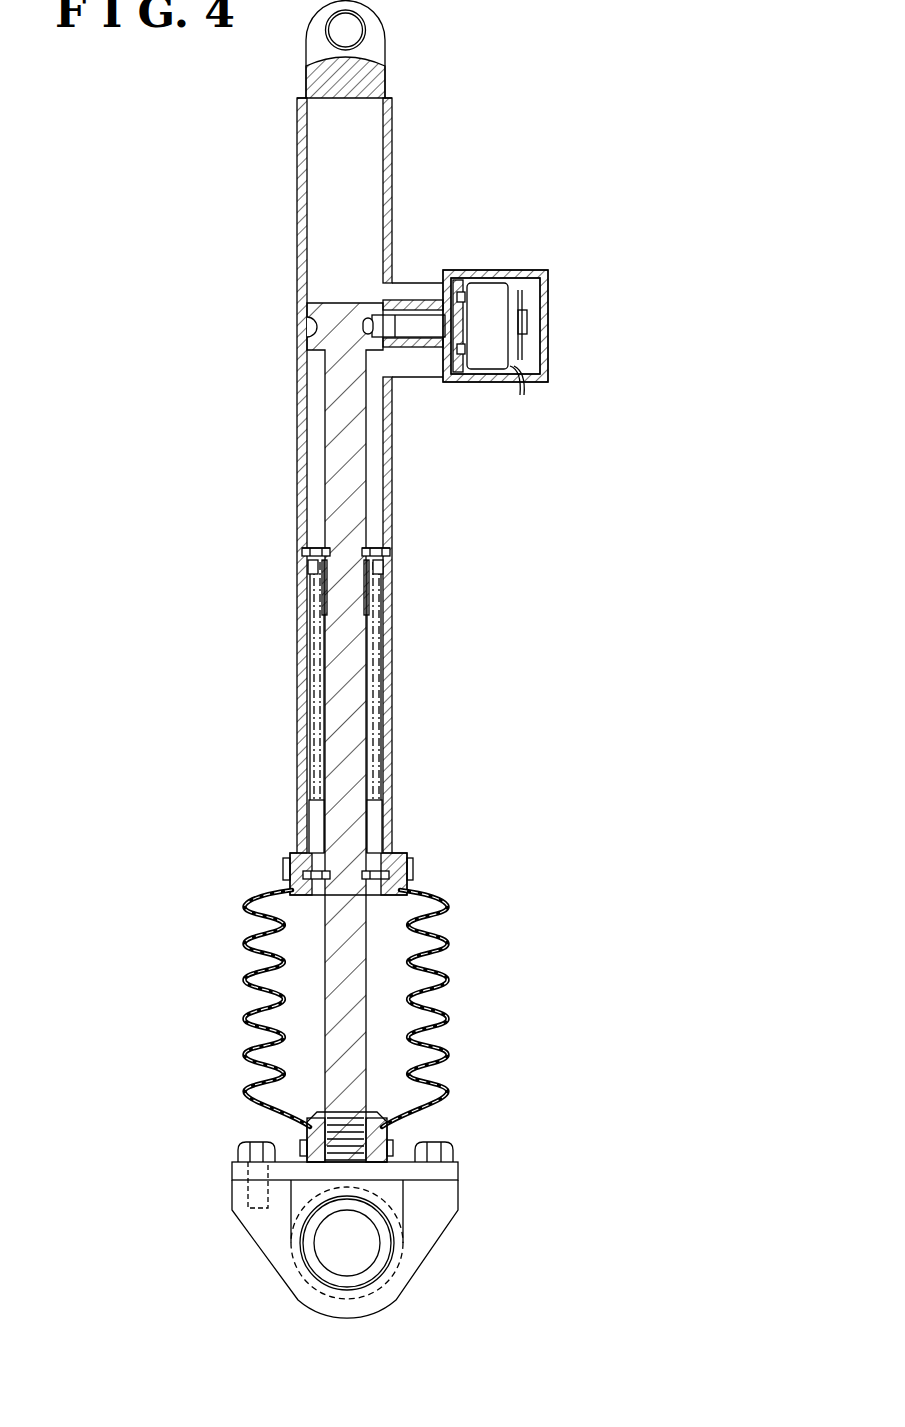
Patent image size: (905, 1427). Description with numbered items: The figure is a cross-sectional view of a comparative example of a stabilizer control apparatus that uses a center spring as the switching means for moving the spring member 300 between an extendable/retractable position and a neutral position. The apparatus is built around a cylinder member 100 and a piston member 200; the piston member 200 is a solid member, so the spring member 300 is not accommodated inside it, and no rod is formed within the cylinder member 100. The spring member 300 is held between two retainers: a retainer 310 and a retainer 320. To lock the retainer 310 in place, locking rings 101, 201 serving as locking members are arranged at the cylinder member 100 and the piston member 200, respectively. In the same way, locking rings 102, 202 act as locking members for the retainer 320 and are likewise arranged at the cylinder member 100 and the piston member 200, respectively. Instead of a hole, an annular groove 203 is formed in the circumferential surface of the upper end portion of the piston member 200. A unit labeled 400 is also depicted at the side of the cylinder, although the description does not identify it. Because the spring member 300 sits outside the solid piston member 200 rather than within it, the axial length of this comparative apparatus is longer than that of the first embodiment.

The cylinder member 100 is at (396, 153).
The locking ring 101 is at (391, 545).
The locking ring 102 is at (394, 888).
The piston member 200 is at (370, 463).
The locking ring 201 is at (379, 546).
The locking ring 202 is at (397, 898).
The annular groove 203 is at (369, 316).
The spring member 300 is at (319, 688).
The retainer 310 is at (371, 592).
The retainer 320 is at (372, 838).
The sensor unit 400 is at (484, 399).